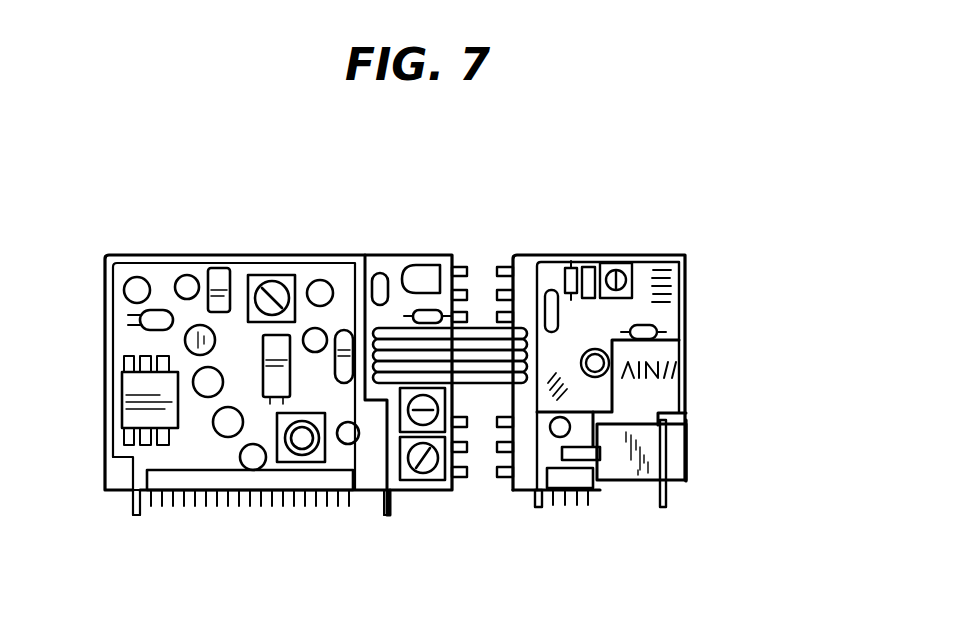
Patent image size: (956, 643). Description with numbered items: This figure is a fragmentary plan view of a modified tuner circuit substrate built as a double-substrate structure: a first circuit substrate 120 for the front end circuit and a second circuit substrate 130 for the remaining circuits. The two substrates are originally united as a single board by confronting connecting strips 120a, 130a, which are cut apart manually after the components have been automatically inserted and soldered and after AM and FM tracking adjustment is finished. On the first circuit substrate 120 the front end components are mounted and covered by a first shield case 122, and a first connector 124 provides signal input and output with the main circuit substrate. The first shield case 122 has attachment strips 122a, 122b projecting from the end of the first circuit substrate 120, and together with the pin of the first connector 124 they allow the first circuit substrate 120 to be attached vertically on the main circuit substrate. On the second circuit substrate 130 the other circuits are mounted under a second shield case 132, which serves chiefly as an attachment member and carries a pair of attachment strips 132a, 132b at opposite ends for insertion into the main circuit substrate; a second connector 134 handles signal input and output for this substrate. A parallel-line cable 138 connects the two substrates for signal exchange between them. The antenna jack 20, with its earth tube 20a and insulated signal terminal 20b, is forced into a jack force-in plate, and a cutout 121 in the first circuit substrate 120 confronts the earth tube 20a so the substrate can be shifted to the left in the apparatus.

The antenna jack 20 is at (668, 443).
The earth tube 20a is at (588, 452).
The signal terminal 20b is at (600, 453).
The first circuit substrate 120 is at (642, 271).
The connecting strip 120a is at (497, 270).
The cutout 121 is at (672, 487).
The first shield case 122 is at (686, 322).
The attachment strip 122a is at (538, 508).
The attachment strip 122b is at (666, 506).
The first connector 124 is at (572, 490).
The second circuit substrate 130 is at (305, 275).
The connecting strip 130a is at (466, 271).
The second shield case 132 is at (106, 348).
The attachment strip 132a is at (384, 503).
The attachment strip 132b is at (133, 500).
The second connector 134 is at (272, 490).
The parallel-line cable 138 is at (408, 355).